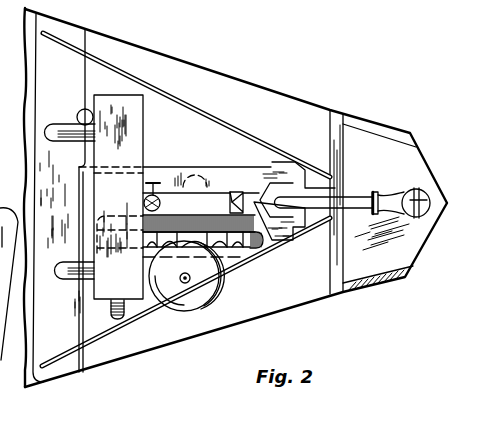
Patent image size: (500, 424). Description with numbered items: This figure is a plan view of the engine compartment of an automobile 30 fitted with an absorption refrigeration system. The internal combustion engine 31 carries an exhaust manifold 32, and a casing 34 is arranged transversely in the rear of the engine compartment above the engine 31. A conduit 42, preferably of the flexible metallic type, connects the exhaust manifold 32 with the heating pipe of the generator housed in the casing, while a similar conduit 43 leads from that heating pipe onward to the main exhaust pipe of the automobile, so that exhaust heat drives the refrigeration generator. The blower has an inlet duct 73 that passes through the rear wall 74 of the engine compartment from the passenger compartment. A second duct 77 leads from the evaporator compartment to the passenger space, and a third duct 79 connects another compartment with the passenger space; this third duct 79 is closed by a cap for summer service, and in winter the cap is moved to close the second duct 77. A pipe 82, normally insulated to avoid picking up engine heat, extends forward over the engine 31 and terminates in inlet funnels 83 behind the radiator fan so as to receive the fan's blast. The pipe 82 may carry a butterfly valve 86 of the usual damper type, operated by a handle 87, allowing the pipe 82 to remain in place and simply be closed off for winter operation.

The automobile 30 is at (176, 58).
The internal combustion engine 31 is at (192, 168).
The exhaust manifold 32 is at (235, 253).
The casing 34 is at (135, 108).
The conduit 42 is at (213, 206).
The conduit 43 is at (118, 319).
The inlet duct 73 is at (88, 110).
The rear wall 74 is at (78, 68).
The second duct 77 is at (62, 125).
The third duct 79 is at (60, 284).
The pipe 82 is at (210, 215).
The inlet funnels 83 is at (298, 182).
The butterfly valve 86 is at (180, 173).
The handle 87 is at (153, 180).